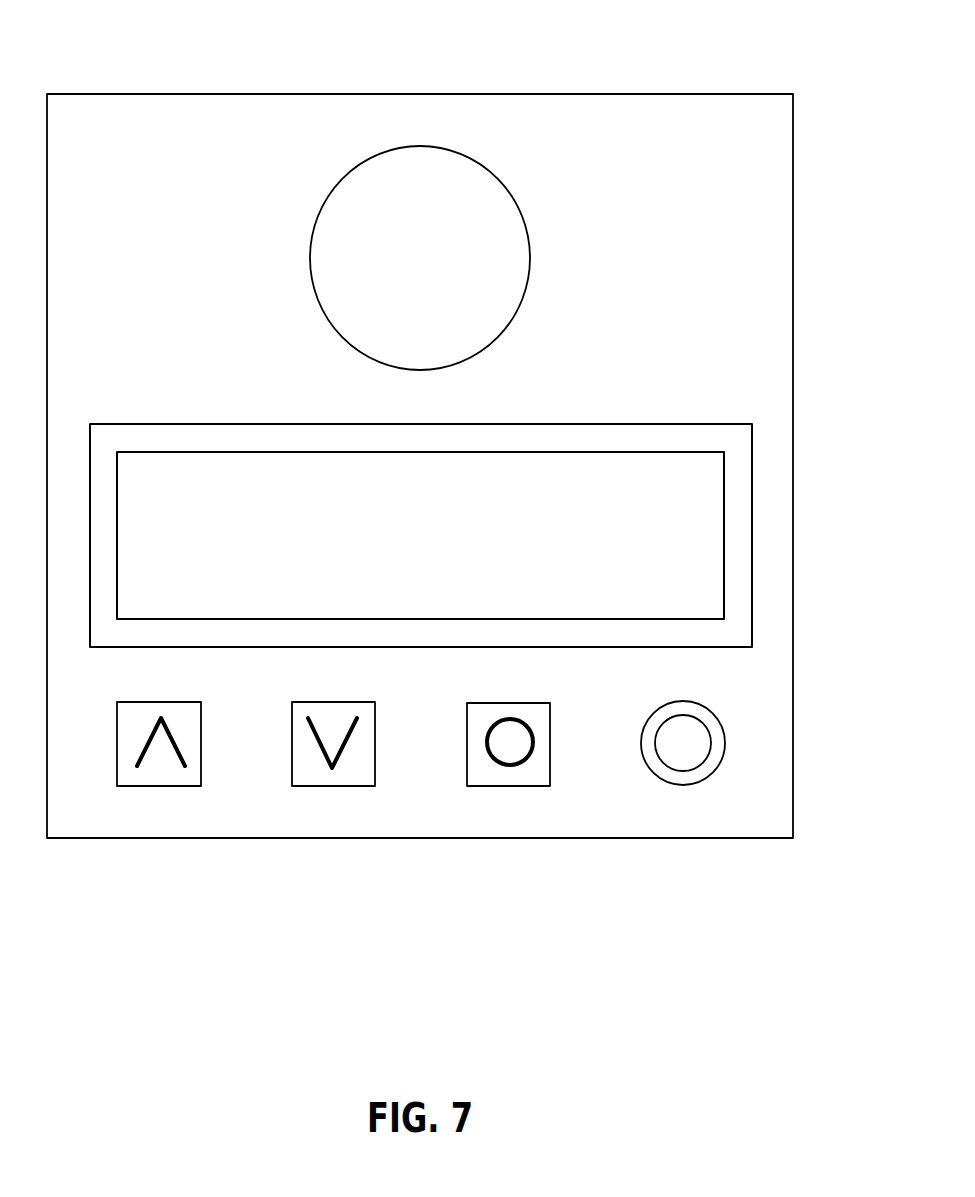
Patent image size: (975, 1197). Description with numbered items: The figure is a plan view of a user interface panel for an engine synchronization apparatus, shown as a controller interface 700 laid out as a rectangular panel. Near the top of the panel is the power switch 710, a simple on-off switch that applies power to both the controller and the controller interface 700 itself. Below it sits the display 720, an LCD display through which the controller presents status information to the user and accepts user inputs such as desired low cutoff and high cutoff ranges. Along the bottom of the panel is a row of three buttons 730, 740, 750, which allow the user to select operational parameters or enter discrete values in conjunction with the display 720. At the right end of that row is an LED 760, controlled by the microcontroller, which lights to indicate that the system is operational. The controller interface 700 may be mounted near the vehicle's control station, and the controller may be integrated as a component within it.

The controller interface 700 is at (504, 81).
The power switch 710 is at (494, 173).
The display 720 is at (557, 424).
The button 730 is at (162, 787).
The button 740 is at (337, 787).
The button 750 is at (510, 787).
The LED 760 is at (683, 786).